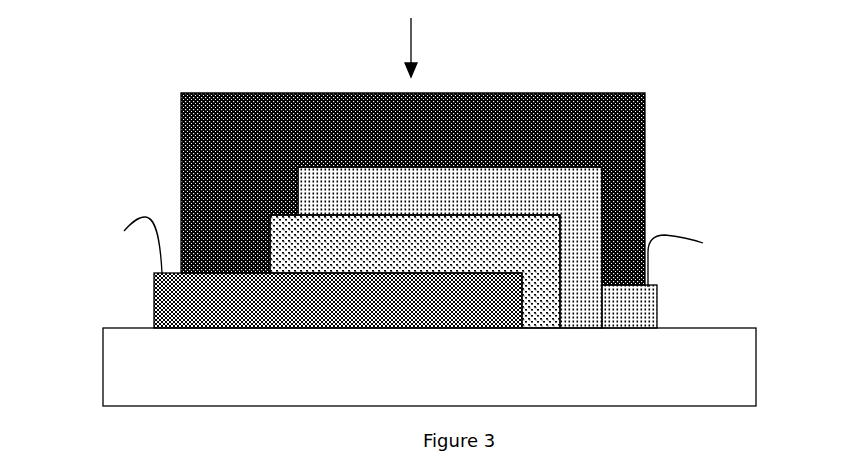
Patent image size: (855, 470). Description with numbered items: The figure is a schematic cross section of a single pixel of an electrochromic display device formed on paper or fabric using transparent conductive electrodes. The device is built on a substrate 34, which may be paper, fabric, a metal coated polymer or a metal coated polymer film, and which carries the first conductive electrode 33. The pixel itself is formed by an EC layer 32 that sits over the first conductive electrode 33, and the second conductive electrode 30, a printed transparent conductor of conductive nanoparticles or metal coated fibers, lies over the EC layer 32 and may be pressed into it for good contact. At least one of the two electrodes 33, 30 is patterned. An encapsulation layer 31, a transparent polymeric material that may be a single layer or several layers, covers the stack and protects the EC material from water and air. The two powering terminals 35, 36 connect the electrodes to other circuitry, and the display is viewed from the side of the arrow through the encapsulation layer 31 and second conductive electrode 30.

The second conductive electrode 30 is at (537, 195).
The encapsulation layer 31 is at (550, 137).
The EC layer 32 is at (530, 248).
The first conductive electrode 33 is at (165, 305).
The substrate 34 is at (163, 370).
The powering terminal 35 is at (124, 231).
The powering terminal 36 is at (703, 243).